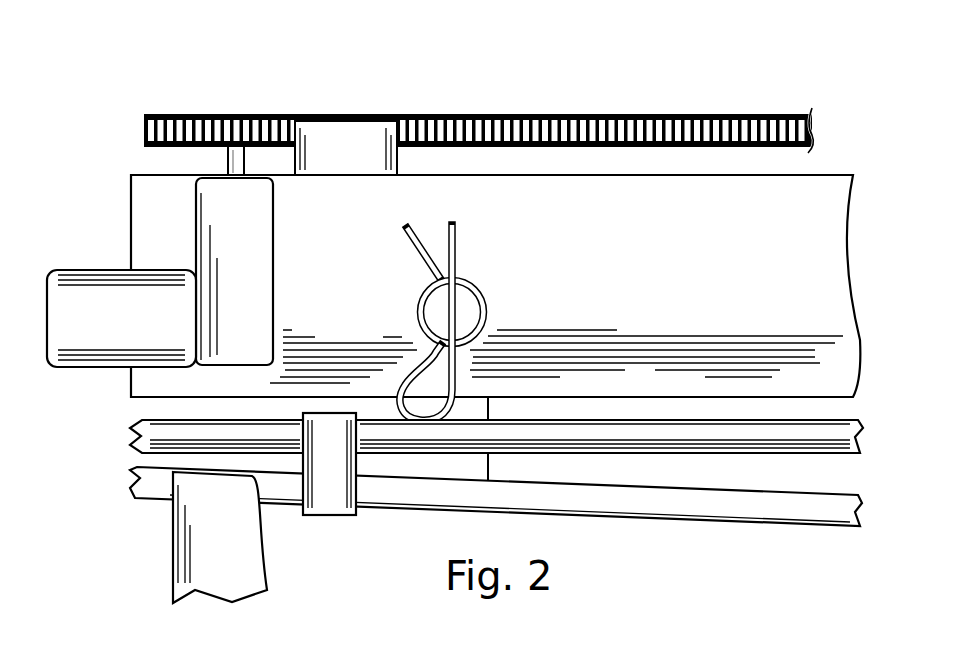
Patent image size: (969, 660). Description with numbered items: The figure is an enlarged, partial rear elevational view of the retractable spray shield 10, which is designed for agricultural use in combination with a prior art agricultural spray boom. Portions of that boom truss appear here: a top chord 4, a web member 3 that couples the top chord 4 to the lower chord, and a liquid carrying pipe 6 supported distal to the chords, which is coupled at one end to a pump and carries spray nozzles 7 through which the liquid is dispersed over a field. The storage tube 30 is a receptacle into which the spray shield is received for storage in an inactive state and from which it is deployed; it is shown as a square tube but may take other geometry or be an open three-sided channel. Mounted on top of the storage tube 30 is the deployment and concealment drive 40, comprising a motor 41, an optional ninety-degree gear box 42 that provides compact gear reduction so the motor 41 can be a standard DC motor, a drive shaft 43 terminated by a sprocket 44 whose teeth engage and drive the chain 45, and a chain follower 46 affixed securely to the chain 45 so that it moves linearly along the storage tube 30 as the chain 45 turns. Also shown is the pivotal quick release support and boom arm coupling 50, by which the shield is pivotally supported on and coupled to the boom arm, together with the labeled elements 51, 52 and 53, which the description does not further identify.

The retractable spray shield 10 is at (807, 81).
The storage tube 30 is at (612, 281).
The deployment and concealment drive 40 is at (478, 109).
The motor 41 is at (138, 332).
The ninety-degree gear box 42 is at (258, 299).
The drive shaft 43 is at (228, 167).
The sprocket 44 is at (186, 125).
The chain 45 is at (438, 118).
The chain follower 46 is at (367, 130).
The pivotal quick release support and boom arm coupling 50 is at (523, 233).
The pin 51 is at (480, 470).
The clip ring 52 is at (472, 288).
The clip straight leg 53 is at (486, 311).
The liquid carrying pipe 6 is at (768, 434).
The top chord 4 is at (650, 506).
The spray nozzles 7 is at (332, 503).
The web members 3 is at (226, 545).